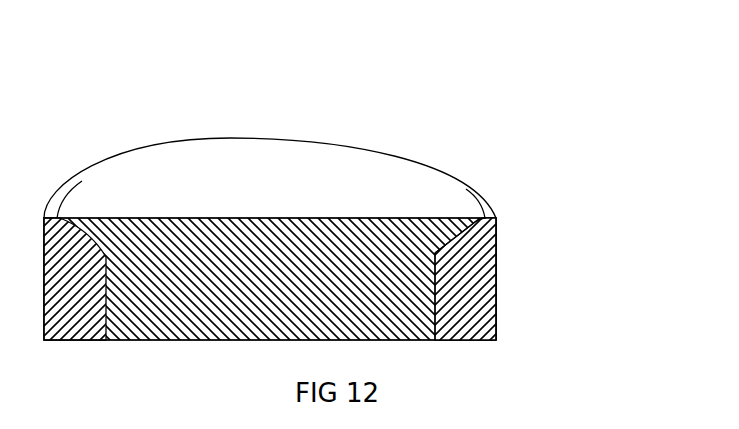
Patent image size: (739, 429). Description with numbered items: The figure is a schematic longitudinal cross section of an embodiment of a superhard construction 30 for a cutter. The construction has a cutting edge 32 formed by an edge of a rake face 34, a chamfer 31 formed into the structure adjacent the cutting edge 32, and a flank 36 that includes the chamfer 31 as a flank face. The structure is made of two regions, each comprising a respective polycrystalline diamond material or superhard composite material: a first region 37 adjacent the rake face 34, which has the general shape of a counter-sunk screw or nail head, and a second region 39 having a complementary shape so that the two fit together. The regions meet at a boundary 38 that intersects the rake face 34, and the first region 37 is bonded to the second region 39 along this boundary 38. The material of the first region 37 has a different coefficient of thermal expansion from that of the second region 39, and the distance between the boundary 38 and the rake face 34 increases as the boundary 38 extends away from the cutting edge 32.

The superhard construction 30 is at (143, 133).
The chamfer 31 is at (492, 220).
The cutting edge 32 is at (486, 216).
The rake face 34 is at (362, 170).
The flank 36 is at (536, 227).
The first region 37 is at (434, 229).
The boundary 38 is at (457, 228).
The second region 39 is at (462, 277).